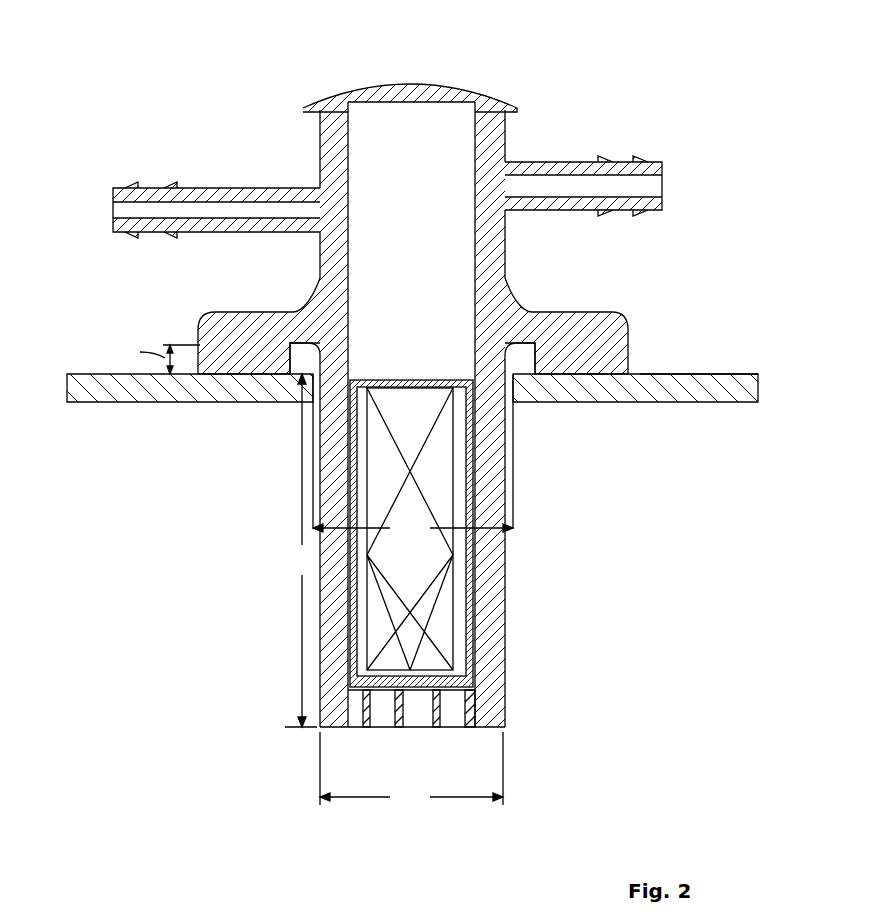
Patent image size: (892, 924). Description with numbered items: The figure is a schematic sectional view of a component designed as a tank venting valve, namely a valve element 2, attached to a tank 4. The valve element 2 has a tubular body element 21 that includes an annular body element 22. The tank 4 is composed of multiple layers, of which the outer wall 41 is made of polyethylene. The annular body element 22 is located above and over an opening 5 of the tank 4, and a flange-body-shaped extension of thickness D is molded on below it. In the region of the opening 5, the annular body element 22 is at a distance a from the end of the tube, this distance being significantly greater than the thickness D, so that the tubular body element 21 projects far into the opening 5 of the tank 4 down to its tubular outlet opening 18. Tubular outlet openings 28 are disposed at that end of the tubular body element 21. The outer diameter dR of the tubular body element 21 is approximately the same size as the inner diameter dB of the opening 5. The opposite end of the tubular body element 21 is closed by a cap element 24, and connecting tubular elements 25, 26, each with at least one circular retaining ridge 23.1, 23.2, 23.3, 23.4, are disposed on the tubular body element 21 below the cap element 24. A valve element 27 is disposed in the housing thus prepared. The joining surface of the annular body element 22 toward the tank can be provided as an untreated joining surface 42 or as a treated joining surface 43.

The valve element 2 is at (601, 69).
The tank 4 is at (730, 402).
The opening 5 is at (513, 403).
The tubular outlet opening 18 is at (352, 382).
The tubular body element 21 is at (318, 268).
The annular body element 22 is at (205, 330).
The circular retaining ridge 23.1 is at (135, 185).
The circular retaining ridge 23.2 is at (175, 185).
The circular retaining ridge 23.3 is at (600, 160).
The circular retaining ridge 23.4 is at (636, 160).
The cap element 24 is at (412, 82).
The connecting tubular element 25 is at (258, 188).
The connecting tubular element 26 is at (552, 162).
The valve element 27 is at (418, 403).
The tubular outlet openings 28 is at (450, 725).
The outer wall 41 is at (712, 373).
The untreated joining surface 42 is at (585, 345).
The treated joining surface 43 is at (585, 345).